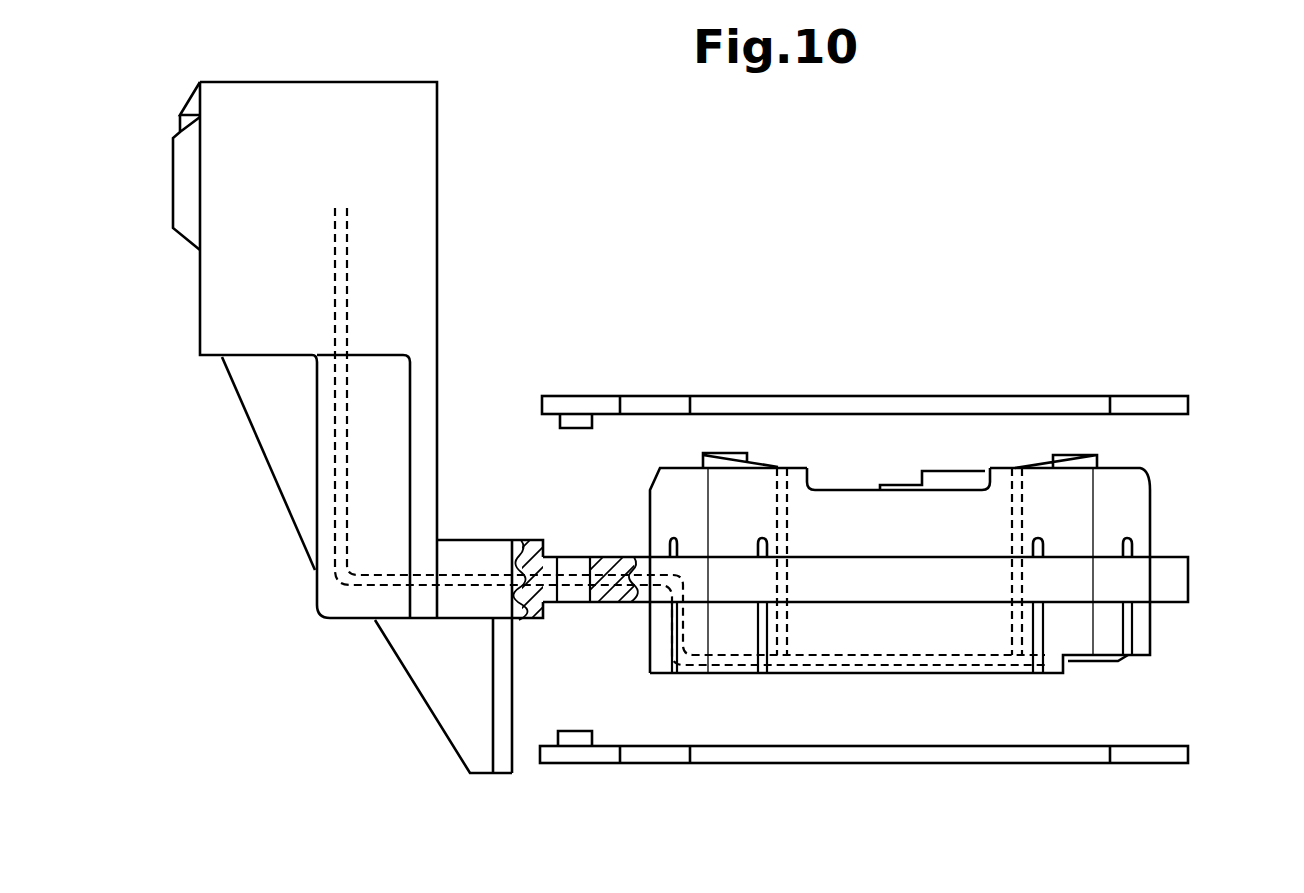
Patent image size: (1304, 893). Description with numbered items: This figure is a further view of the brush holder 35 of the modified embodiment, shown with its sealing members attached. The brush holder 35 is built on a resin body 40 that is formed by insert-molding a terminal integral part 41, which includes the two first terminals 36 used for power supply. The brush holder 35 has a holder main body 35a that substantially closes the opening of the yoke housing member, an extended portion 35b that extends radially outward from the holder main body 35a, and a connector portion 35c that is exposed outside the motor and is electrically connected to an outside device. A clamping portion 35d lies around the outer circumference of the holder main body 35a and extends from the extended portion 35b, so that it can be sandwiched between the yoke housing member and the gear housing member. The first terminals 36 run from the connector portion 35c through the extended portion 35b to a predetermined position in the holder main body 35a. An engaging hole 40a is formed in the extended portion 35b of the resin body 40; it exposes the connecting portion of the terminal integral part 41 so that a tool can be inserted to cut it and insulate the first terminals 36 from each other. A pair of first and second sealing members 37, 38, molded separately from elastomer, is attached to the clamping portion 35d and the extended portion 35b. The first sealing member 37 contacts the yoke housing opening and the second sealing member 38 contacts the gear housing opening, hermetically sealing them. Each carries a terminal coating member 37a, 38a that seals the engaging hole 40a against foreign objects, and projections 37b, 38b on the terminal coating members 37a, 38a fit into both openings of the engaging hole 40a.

The brush holder 35 is at (1097, 203).
The holder main body 35a is at (958, 470).
The extended portion 35b is at (618, 557).
The connector portion 35c is at (437, 149).
The clamping portion 35d is at (1188, 556).
The first terminals 36 is at (575, 603).
The terminal integral part 41 is at (573, 579).
The first sealing member 37 is at (1140, 396).
The terminal coating member 37a is at (602, 395).
The projection 37b is at (562, 420).
The second sealing member 38 is at (1148, 766).
The terminal coating member 38a is at (597, 765).
The projection 38b is at (577, 740).
The resin body 40 is at (1150, 498).
The engaging hole 40a is at (565, 557).